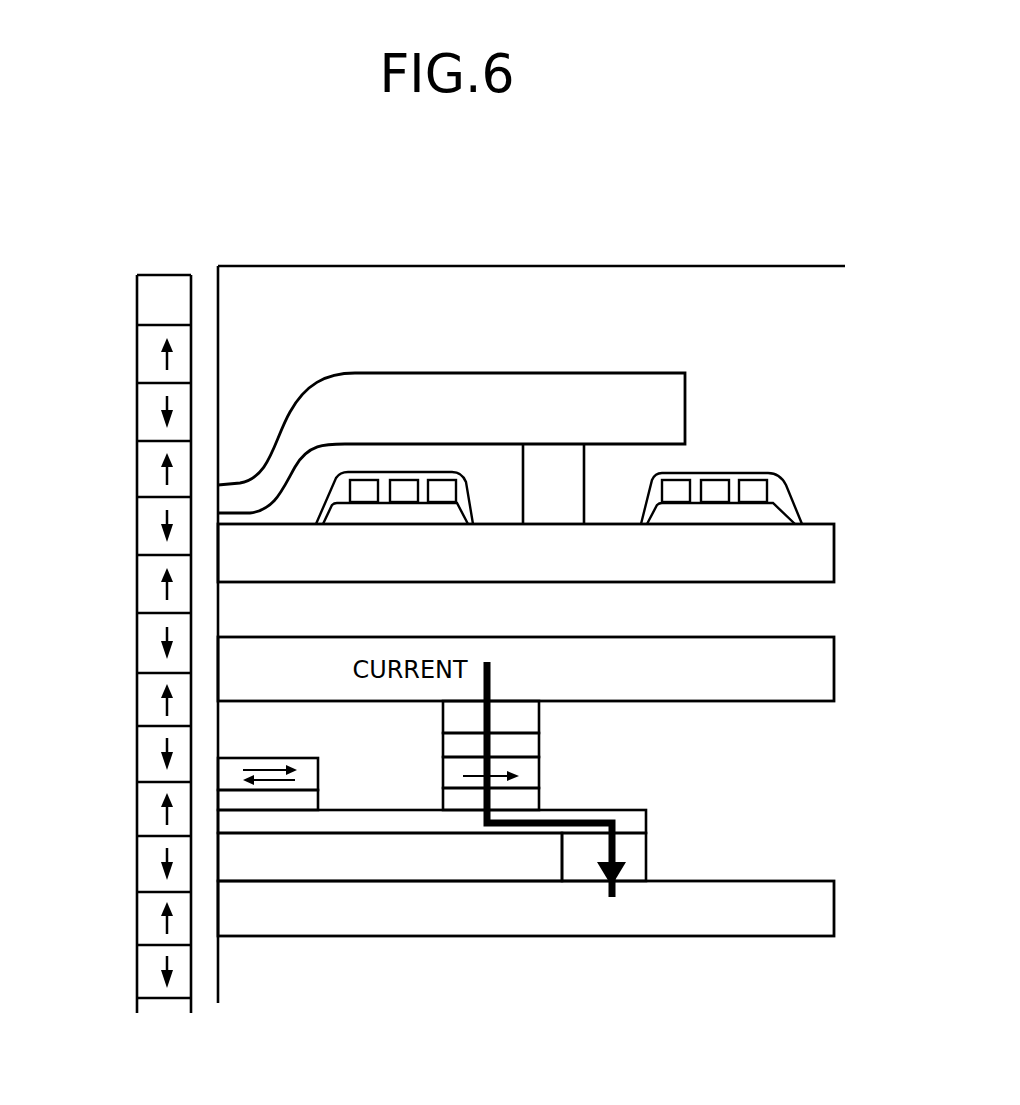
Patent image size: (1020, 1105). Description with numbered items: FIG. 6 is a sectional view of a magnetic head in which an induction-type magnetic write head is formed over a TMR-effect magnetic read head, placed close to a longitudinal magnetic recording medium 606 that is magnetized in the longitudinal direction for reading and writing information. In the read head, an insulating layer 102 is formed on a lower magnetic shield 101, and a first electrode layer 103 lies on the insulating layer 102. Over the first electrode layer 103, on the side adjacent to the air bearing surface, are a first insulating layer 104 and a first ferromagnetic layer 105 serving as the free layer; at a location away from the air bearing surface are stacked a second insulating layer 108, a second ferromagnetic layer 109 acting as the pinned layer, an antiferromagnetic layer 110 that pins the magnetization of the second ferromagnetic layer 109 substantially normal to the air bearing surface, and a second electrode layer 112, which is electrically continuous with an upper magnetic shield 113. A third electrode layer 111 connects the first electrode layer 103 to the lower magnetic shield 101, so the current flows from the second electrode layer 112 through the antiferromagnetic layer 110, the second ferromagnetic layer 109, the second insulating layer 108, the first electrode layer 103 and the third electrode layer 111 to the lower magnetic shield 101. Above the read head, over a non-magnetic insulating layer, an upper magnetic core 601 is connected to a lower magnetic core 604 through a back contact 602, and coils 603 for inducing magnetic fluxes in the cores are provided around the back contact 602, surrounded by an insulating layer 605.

The lower magnetic shield 101 is at (598, 918).
The insulating layer 102 is at (458, 862).
The first electrode layer 103 is at (246, 820).
The first insulating layer 104 is at (268, 802).
The first ferromagnetic layer (free layer) 105 is at (303, 773).
The second insulating layer 108 is at (515, 798).
The second ferromagnetic layer (pinned layer) 109 is at (529, 773).
The antiferromagnetic layer 110 is at (517, 746).
The third electrode layer 111 is at (625, 853).
The second electrode layer 112 is at (458, 720).
The upper magnetic shield 113 is at (813, 662).
The upper magnetic core 601 is at (376, 382).
The back contact 602 is at (552, 457).
The coils 603 is at (440, 489).
The lower magnetic core 604 is at (803, 552).
The insulating layer 605 is at (303, 492).
The longitudinal magnetic recording medium 606 is at (150, 470).